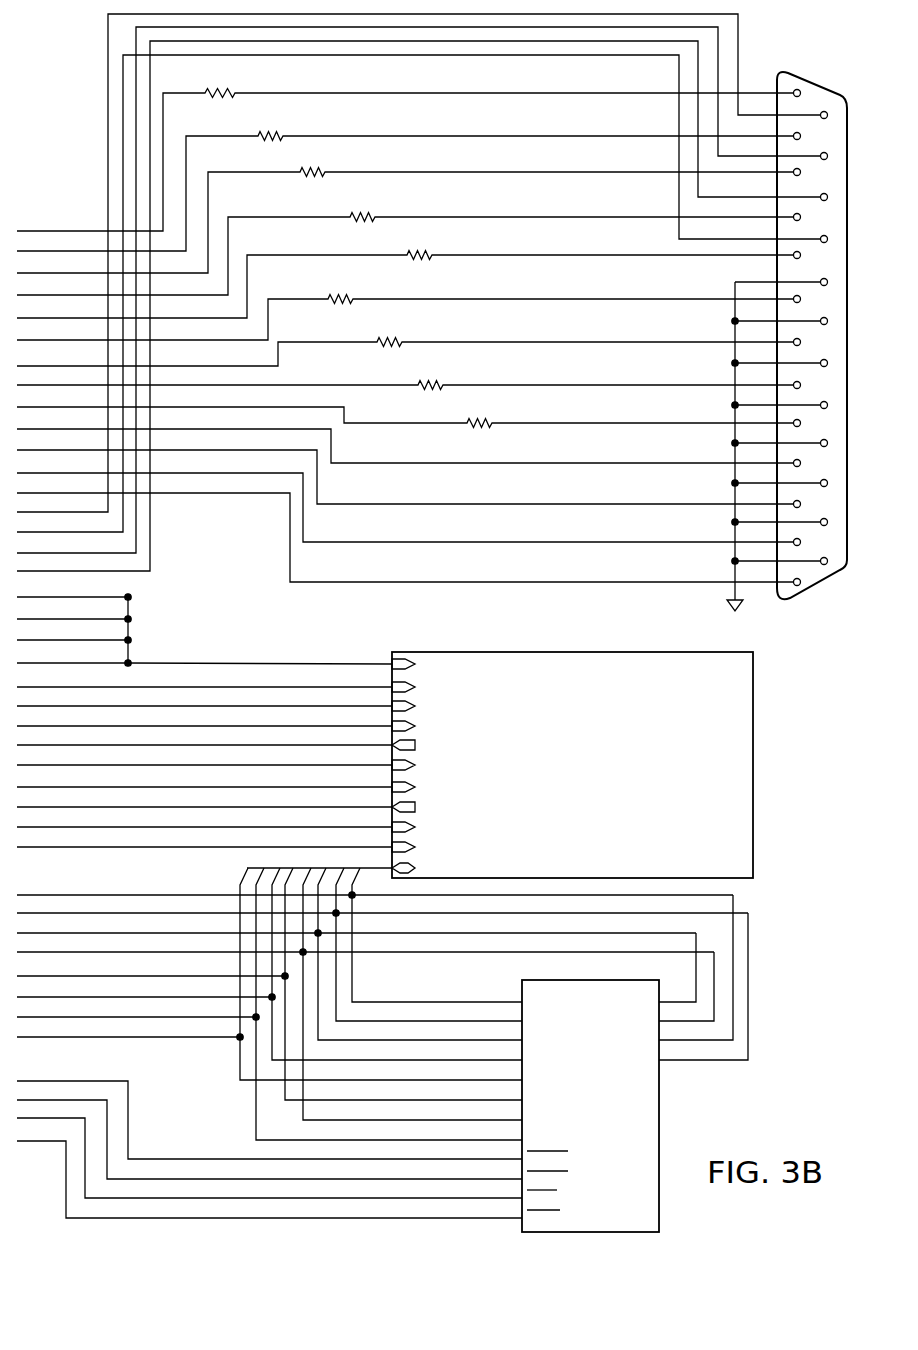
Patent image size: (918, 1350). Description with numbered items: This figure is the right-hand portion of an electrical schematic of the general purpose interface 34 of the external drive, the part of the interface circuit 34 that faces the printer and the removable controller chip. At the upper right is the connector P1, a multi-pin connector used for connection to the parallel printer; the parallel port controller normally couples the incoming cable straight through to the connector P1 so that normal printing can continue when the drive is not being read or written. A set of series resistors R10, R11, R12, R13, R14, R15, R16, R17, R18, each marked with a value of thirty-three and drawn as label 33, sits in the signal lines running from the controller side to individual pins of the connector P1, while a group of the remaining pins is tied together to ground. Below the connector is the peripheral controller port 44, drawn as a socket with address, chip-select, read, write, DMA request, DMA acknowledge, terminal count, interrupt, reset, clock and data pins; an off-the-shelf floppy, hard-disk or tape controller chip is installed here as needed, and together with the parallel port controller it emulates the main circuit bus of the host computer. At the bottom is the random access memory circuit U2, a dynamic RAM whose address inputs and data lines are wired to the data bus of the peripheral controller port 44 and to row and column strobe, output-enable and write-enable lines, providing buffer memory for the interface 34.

The peripheral controller port 44 is at (758, 711).
The general purpose interface 34 is at (790, 770).
The 33 ohm resistors 33 is at (405, 258).
The resistor R10 is at (405, 150).
The resistor R11 is at (405, 181).
The resistor R12 is at (405, 210).
The resistor R13 is at (405, 244).
The resistor R14 is at (405, 275).
The resistor R15 is at (405, 307).
The resistor R16 is at (405, 342).
The resistor R17 is at (405, 384).
The resistor R18 is at (405, 423).
The connector P1 is at (787, 330).
The random access memory (RAM) circuit U2 is at (590, 1096).